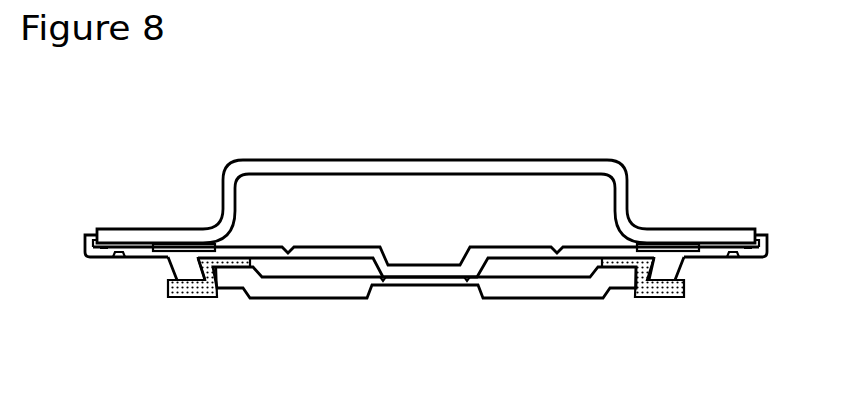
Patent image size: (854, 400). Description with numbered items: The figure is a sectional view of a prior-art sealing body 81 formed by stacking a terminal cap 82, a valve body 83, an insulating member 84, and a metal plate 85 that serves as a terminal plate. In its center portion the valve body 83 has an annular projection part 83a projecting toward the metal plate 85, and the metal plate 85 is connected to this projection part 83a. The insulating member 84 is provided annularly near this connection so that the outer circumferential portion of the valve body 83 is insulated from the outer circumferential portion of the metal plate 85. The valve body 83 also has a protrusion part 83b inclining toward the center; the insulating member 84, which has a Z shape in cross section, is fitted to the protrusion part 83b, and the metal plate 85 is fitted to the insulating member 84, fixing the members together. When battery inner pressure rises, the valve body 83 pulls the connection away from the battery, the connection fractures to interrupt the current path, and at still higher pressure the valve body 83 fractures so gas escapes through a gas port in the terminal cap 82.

The sealing body 81 is at (158, 89).
The terminal cap 82 is at (477, 167).
The valve body 83 is at (712, 250).
The annular projection part 83a is at (428, 270).
The protrusion part 83b is at (664, 266).
The insulating member 84 is at (652, 300).
The metal plate 85 is at (308, 287).